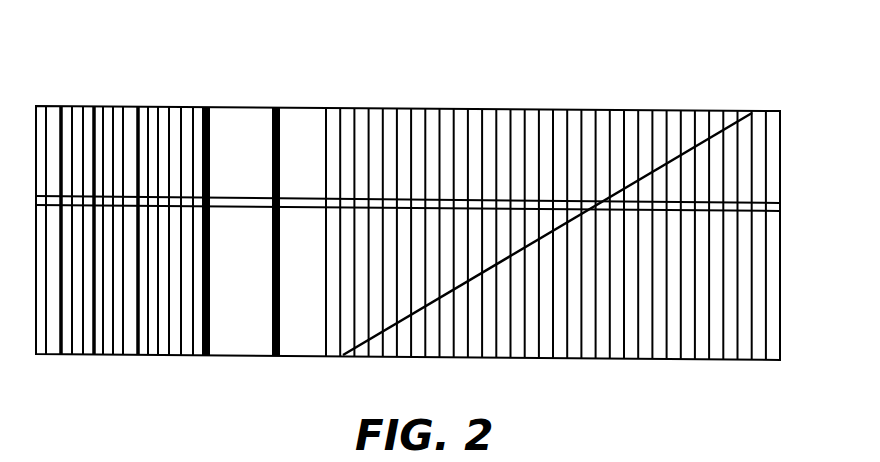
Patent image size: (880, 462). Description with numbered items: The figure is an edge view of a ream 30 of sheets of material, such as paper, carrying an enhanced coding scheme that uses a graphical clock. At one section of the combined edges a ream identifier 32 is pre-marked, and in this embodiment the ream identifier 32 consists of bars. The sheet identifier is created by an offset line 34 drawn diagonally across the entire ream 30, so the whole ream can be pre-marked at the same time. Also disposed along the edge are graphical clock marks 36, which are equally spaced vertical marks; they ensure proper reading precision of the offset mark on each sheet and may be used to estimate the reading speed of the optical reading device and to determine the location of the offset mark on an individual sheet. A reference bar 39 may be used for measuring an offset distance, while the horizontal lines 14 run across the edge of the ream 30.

The ream 30 is at (488, 68).
The ream identifier 32 is at (128, 356).
The reference bar 39 is at (277, 356).
The graphical clock marks 36 is at (767, 310).
The horizontal lines 14 is at (773, 210).
The offset line 34 is at (676, 156).